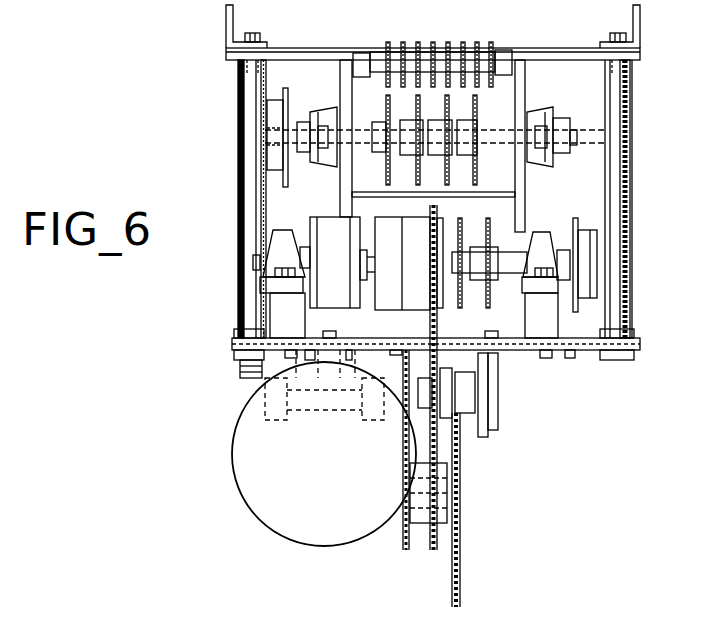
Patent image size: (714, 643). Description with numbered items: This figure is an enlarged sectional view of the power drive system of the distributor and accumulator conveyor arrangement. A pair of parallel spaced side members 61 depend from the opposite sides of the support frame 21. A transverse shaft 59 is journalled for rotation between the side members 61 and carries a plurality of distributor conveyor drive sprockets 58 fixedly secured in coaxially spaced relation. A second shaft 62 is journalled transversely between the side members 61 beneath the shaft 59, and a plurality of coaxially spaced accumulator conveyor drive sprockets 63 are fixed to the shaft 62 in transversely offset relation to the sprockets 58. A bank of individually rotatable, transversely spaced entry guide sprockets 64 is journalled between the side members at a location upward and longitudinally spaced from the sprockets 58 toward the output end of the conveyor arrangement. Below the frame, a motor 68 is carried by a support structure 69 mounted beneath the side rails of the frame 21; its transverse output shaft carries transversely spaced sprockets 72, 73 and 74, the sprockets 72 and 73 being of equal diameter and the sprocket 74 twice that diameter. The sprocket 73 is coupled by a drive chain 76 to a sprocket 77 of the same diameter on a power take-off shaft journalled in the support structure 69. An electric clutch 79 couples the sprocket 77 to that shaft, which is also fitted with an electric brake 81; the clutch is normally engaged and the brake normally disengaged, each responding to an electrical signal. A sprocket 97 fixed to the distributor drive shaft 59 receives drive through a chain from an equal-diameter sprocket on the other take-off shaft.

The support frame 21 is at (228, 32).
The distributor conveyor drive sprockets 58 is at (390, 185).
The transverse shaft 59 is at (488, 130).
The side members 61 is at (342, 80).
The second shaft 62 is at (498, 273).
The accumulator conveyor drive sprockets 63 is at (488, 222).
The entry guide sprockets 64 is at (486, 45).
The motor 68 is at (327, 504).
The support structure 69 is at (350, 354).
The sprocket 72 is at (405, 551).
The sprocket 73 is at (432, 552).
The sprocket 74 is at (462, 570).
The drive chain 76 is at (435, 353).
The sprocket 77 is at (437, 325).
The electric clutch 79 is at (420, 302).
The electric brake 81 is at (336, 300).
The sprocket 97 is at (287, 182).